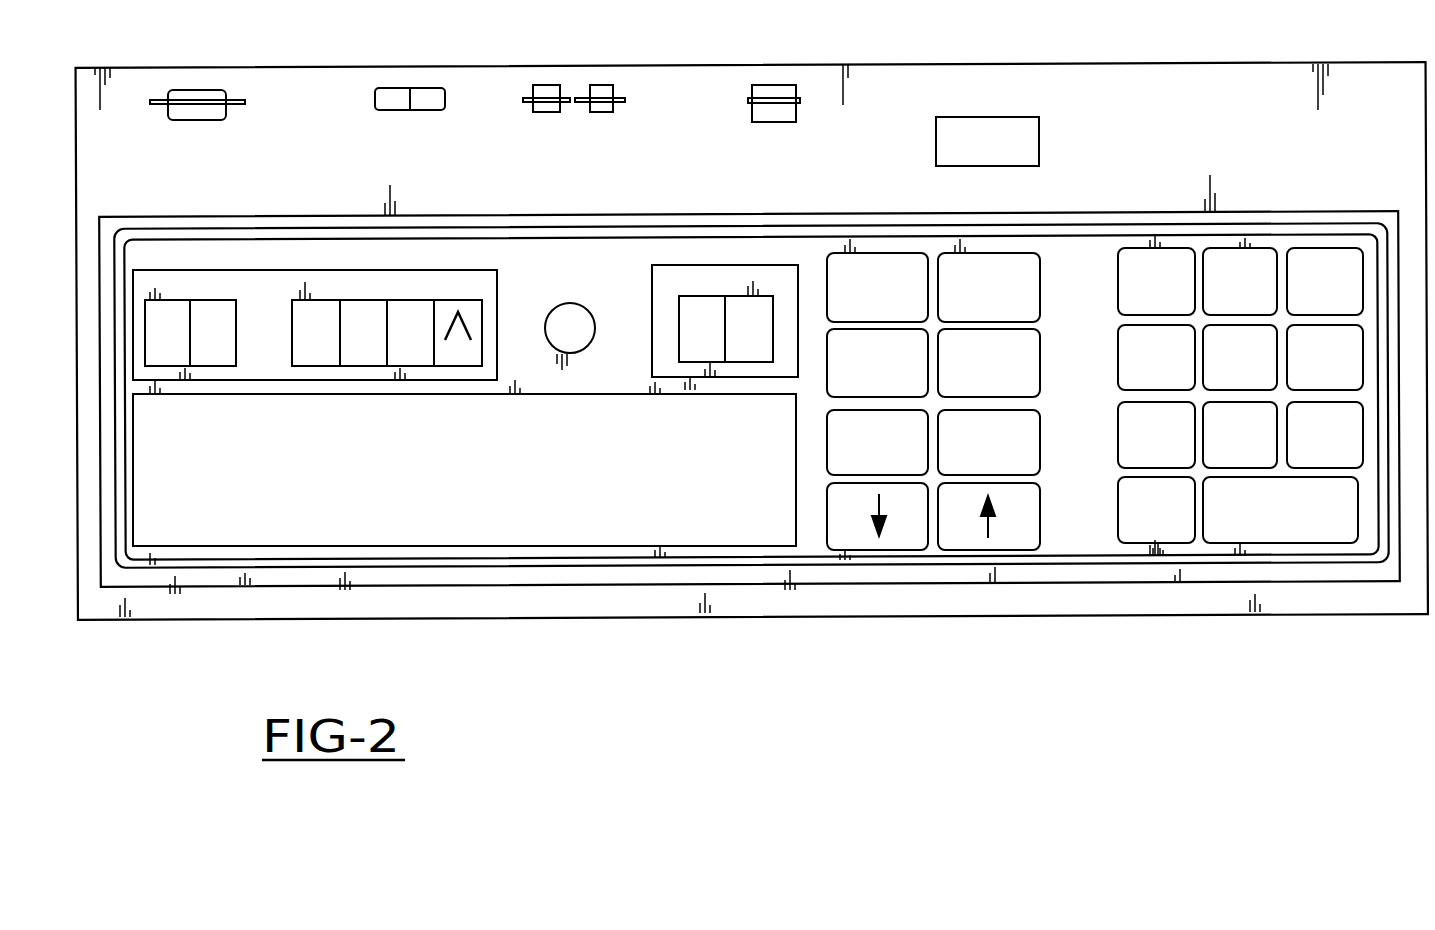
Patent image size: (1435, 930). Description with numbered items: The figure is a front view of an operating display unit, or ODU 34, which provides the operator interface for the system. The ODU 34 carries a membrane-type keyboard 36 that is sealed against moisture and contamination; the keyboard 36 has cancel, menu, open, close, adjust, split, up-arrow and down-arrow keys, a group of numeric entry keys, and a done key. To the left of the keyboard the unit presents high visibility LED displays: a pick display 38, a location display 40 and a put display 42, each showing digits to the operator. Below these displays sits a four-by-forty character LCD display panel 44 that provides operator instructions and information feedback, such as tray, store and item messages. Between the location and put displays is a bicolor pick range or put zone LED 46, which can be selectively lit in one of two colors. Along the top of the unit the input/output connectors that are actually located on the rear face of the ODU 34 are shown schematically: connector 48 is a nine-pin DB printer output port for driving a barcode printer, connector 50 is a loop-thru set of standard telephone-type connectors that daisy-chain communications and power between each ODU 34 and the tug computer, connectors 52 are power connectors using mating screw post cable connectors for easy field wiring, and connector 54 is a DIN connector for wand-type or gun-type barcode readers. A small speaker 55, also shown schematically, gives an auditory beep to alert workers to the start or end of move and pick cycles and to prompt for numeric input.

The operating display unit 34 is at (1128, 80).
The membrane-type keyboard 36 is at (1103, 245).
The pick display 38 is at (225, 307).
The location display 40 is at (443, 307).
The put display 42 is at (690, 298).
The LCD display panel 44 is at (624, 535).
The bicolor pick range or put zone LED 46 is at (568, 330).
The printer output port connector 48 is at (192, 90).
The loop-thru power and communications connector 50 is at (420, 88).
The power connectors 52 is at (596, 85).
The DIN connector 54 is at (775, 85).
The speaker 55 is at (988, 116).